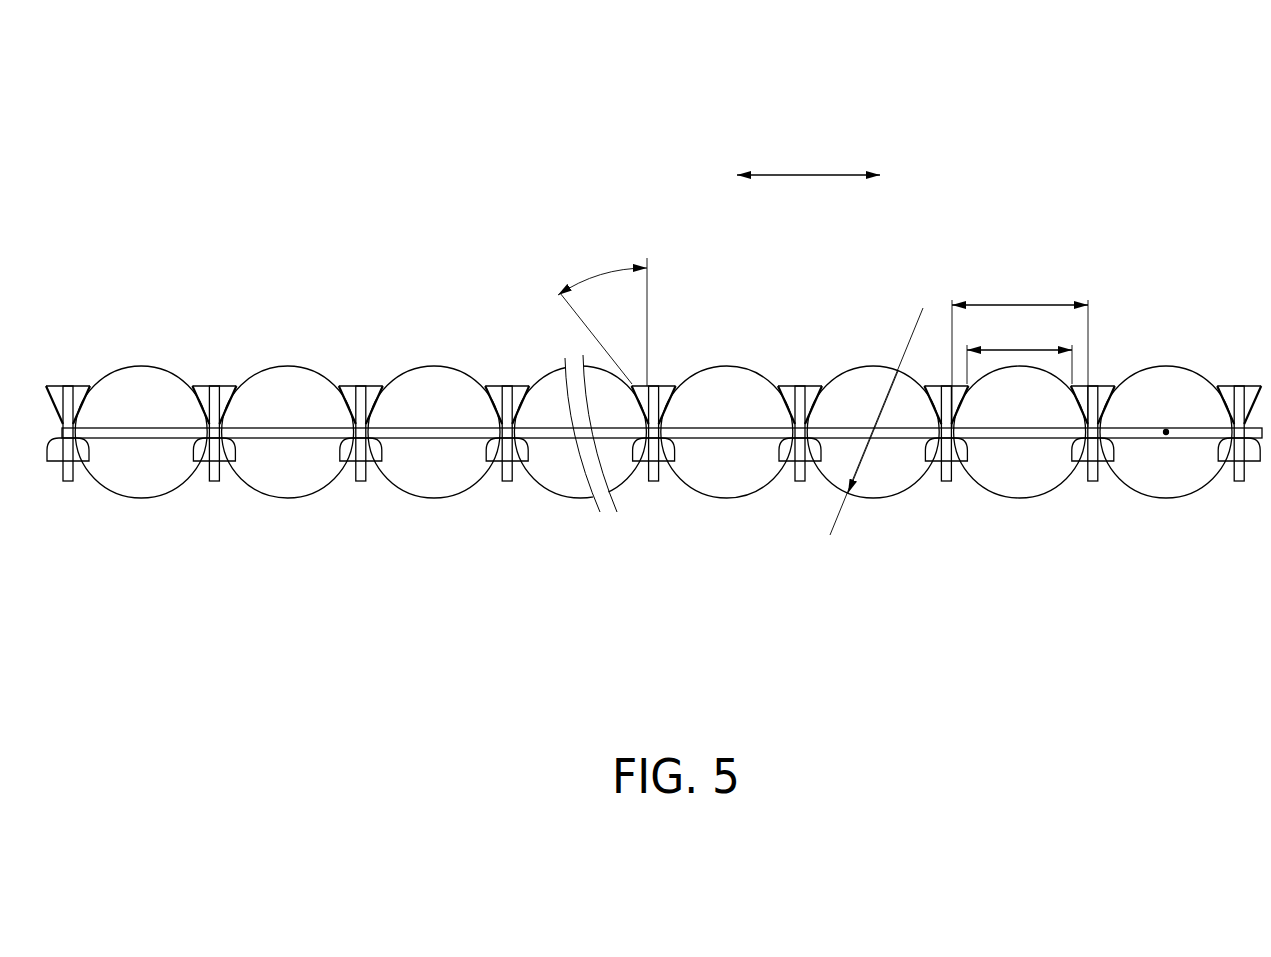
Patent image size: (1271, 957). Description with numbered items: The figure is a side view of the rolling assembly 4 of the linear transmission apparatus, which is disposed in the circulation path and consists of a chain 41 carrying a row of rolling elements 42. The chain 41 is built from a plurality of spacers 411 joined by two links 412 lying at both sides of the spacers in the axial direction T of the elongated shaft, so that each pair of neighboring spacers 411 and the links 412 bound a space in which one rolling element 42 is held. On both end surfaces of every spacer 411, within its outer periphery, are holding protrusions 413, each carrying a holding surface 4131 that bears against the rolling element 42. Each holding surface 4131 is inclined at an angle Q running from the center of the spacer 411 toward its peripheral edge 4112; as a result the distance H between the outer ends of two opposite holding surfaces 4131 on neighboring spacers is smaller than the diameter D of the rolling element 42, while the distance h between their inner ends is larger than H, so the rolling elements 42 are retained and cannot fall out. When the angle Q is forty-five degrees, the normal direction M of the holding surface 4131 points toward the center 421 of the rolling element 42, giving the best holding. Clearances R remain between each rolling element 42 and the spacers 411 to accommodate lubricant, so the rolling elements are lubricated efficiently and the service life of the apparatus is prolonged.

The rolling assembly 4 is at (362, 158).
The chain 41 is at (654, 423).
The spacer 411 is at (216, 393).
The peripheral edge 4112 is at (359, 393).
The link 412 is at (165, 433).
The holding protrusion 413 is at (226, 453).
The holding surface 4131 is at (1084, 398).
The rolling element 42 is at (653, 405).
The center of the rolling element 421 is at (1166, 434).
The axial direction T is at (808, 156).
The inclined angle Q is at (602, 312).
The diameter of the rolling element D is at (876, 407).
The distance between inner ends of holding surfaces h is at (1020, 350).
The distance between outer ends of holding surfaces H is at (1019, 351).
The clearance R is at (808, 405).
The normal direction of the holding surface M is at (1187, 417).